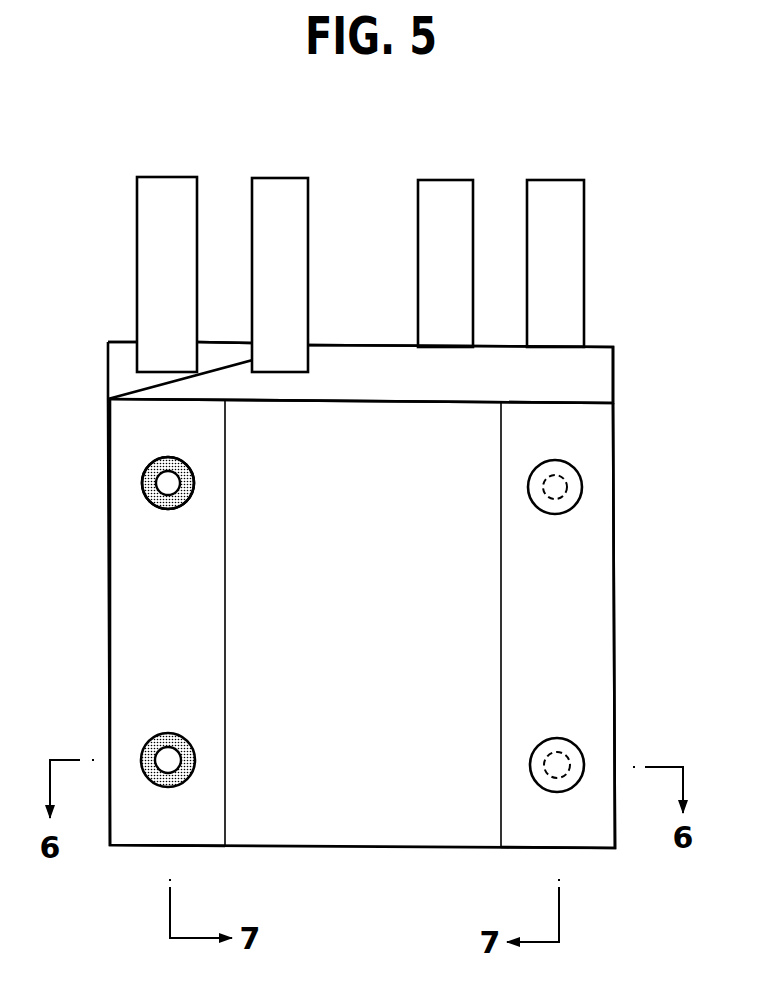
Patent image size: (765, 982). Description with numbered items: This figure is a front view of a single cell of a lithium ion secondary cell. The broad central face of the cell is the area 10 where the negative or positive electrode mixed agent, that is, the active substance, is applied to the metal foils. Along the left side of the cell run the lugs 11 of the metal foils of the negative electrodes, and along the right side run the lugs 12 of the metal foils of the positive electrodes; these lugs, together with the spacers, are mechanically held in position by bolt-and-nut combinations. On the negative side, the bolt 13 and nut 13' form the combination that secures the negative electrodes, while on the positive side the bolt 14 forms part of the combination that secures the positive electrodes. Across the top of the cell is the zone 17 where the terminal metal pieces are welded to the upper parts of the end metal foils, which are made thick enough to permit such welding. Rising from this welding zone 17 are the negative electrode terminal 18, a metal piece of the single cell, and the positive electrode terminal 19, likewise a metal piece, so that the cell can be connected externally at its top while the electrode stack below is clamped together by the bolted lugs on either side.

The area where the electrode mixed agent is applied 10 is at (375, 833).
The lugs of the metal foils of the negative electrodes 11 is at (147, 833).
The lugs of the metal foils of the positive electrodes 12 is at (583, 833).
The bolt of the bolt-and-nut combination for the negative electrodes 13 is at (111, 622).
The nut of the bolt-and-nut combination for the negative electrodes 13' is at (108, 472).
The bolt of the bolt-and-nut combination for the positive electrodes 14 is at (560, 485).
The terminal welding zone 17 is at (597, 367).
The negative electrode terminal 18 is at (150, 232).
The positive electrode terminal 19 is at (432, 277).